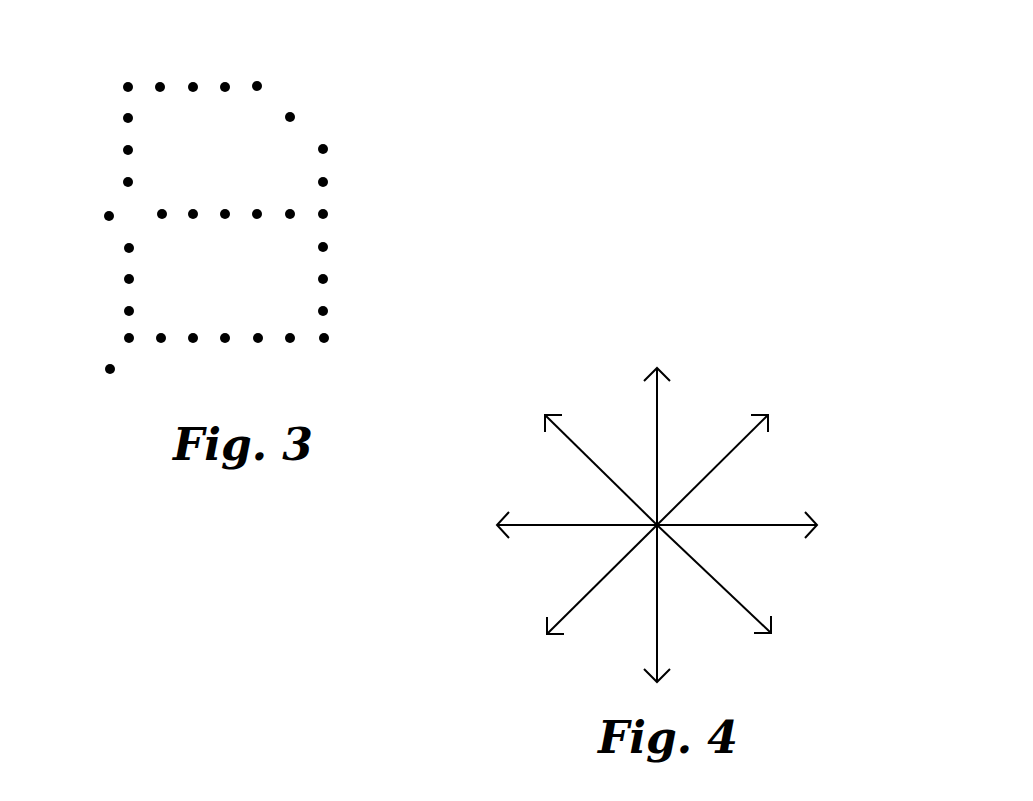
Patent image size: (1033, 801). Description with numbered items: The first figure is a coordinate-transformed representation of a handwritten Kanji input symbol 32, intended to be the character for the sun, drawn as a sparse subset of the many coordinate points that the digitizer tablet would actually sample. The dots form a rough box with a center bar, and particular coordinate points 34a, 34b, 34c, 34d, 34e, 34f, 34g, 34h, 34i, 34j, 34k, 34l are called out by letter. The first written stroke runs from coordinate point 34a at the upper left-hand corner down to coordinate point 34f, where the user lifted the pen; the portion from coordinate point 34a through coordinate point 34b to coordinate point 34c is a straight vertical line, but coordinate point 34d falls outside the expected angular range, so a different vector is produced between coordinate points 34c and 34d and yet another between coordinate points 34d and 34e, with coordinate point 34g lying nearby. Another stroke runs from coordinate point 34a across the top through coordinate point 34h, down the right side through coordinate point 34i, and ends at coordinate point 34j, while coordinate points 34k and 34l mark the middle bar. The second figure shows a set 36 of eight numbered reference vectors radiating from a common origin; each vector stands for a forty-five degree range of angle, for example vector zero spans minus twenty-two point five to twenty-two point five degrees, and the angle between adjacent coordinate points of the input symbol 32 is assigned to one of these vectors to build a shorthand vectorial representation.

In FIG. 3, the input symbol 32 is at (440, 90).
In FIG. 3, the coordinate point 34a is at (125, 86).
In FIG. 3, the coordinate point 34b is at (126, 118).
In FIG. 3, the coordinate point 34c is at (131, 182).
In FIG. 3, the coordinate point 34d is at (110, 219).
In FIG. 3, the coordinate point 34e is at (131, 249).
In FIG. 3, the coordinate point 34f is at (127, 337).
In FIG. 3, the coordinate point 34g is at (110, 372).
In FIG. 3, the coordinate point 34h is at (259, 83).
In FIG. 3, the coordinate point 34i is at (325, 147).
In FIG. 3, the coordinate point 34j is at (326, 336).
In FIG. 3, the coordinate point 34k is at (164, 212).
In FIG. 3, the coordinate point 34l is at (325, 213).
In FIG. 4, the set of numbered reference vectors 36 is at (763, 348).